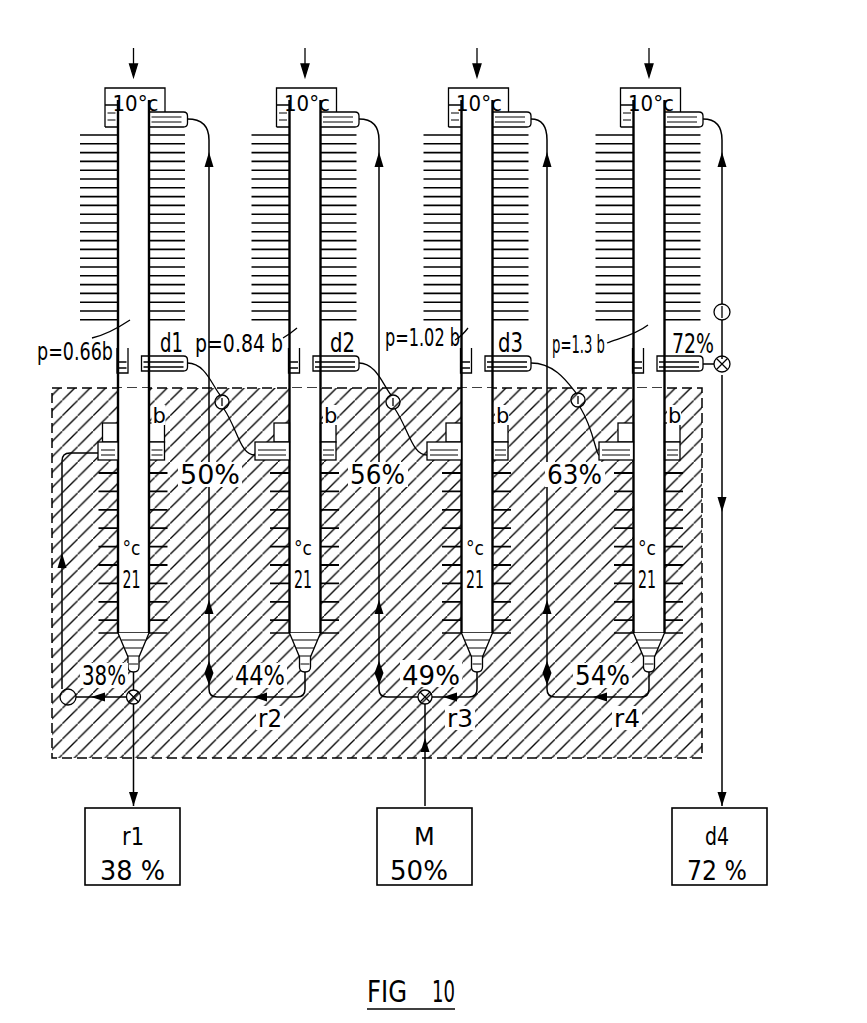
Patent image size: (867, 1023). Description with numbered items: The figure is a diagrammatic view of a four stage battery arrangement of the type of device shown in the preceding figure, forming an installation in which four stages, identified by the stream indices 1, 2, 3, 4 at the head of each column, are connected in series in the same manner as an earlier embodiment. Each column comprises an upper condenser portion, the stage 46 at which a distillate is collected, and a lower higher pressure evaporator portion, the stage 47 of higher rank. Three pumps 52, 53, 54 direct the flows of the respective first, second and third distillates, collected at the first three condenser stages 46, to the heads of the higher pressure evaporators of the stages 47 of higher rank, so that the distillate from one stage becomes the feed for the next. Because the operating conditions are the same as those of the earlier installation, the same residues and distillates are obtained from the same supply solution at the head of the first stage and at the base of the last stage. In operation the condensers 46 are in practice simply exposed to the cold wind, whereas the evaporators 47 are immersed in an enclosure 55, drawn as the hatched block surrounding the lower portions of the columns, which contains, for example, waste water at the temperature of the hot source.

The first gas stream inlet 1 is at (136, 47).
The second gas stream inlet 2 is at (306, 47).
The third gas stream inlet 3 is at (478, 47).
The fourth gas stream inlet 4 is at (650, 47).
The condenser stage 46 is at (138, 165).
The higher pressure evaporator stage 47 is at (134, 510).
The pump 52 is at (222, 395).
The pump 53 is at (393, 395).
The pump 54 is at (578, 393).
The enclosure 55 is at (571, 748).